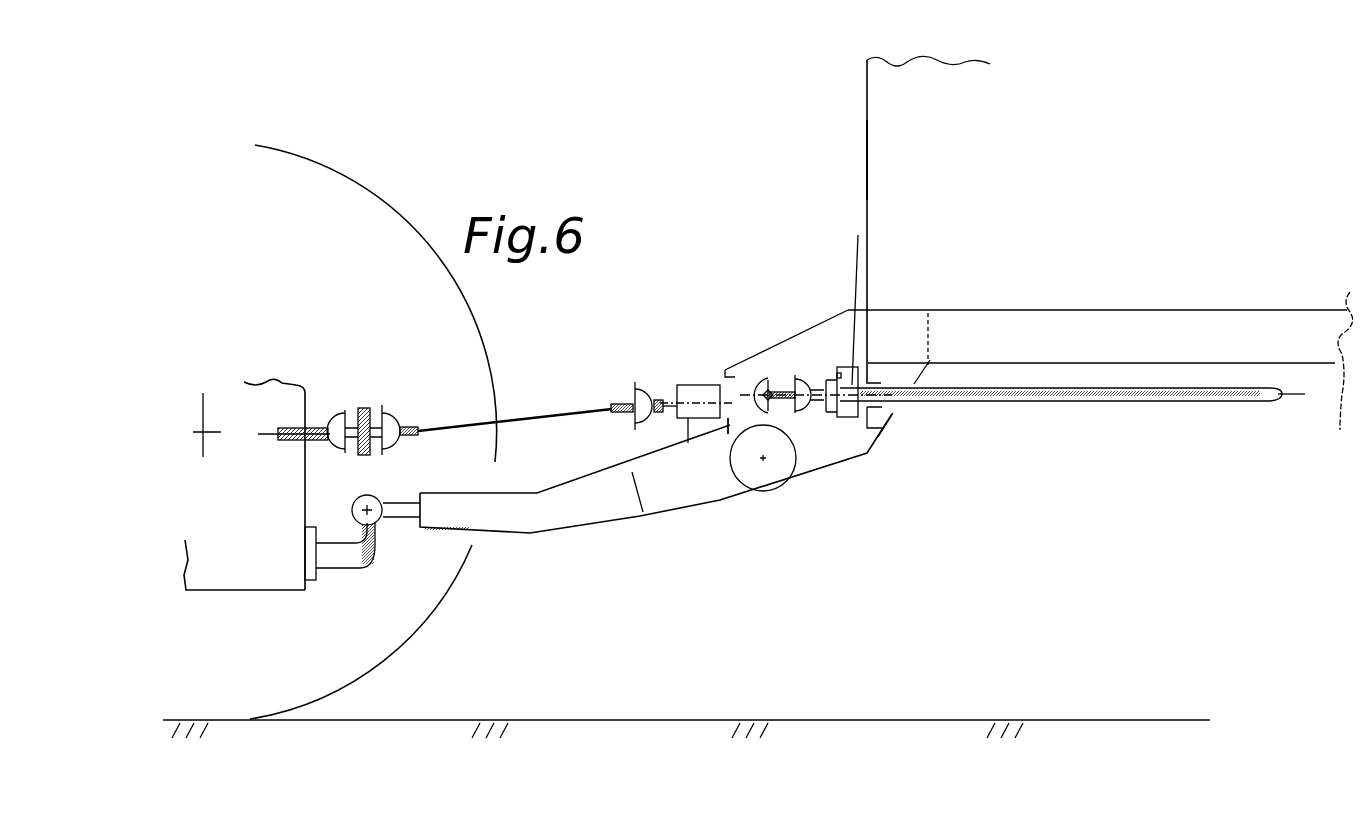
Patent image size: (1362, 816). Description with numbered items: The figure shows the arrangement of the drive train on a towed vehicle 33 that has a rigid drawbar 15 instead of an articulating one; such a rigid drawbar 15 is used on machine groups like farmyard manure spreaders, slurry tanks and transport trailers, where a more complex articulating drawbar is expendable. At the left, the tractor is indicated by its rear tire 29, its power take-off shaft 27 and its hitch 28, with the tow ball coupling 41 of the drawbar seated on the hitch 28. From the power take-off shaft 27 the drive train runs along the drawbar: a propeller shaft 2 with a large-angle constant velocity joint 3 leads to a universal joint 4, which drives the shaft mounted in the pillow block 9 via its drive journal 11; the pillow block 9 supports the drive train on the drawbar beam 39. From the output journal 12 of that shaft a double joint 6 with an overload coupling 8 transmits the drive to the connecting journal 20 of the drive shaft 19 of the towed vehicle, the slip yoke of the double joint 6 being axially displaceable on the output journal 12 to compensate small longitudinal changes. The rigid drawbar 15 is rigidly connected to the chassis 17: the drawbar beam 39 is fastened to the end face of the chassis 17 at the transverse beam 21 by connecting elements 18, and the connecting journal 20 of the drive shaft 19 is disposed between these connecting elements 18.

The propeller shaft 2 is at (523, 422).
The large-angle constant velocity joint 3 is at (366, 410).
The universal joint 4 is at (631, 385).
The double joint 6 is at (782, 392).
The overload coupling 8 is at (838, 367).
The pillow block 9 is at (688, 378).
The drive journal 11 is at (663, 400).
The output journal 12 is at (727, 428).
The rigid drawbar 15 is at (714, 500).
The chassis 17 is at (1014, 306).
The connecting element 18 is at (820, 446).
The drive shaft 19 is at (1050, 402).
The connecting journal 20 is at (858, 236).
The transverse beam 21 is at (908, 323).
The power take-off shaft 27 is at (288, 428).
The hitch 28 is at (376, 517).
The rear tire 29 is at (400, 650).
The towed vehicle 33 is at (804, 141).
The drawbar beam 39 is at (582, 518).
The tow ball coupling 41 is at (448, 579).